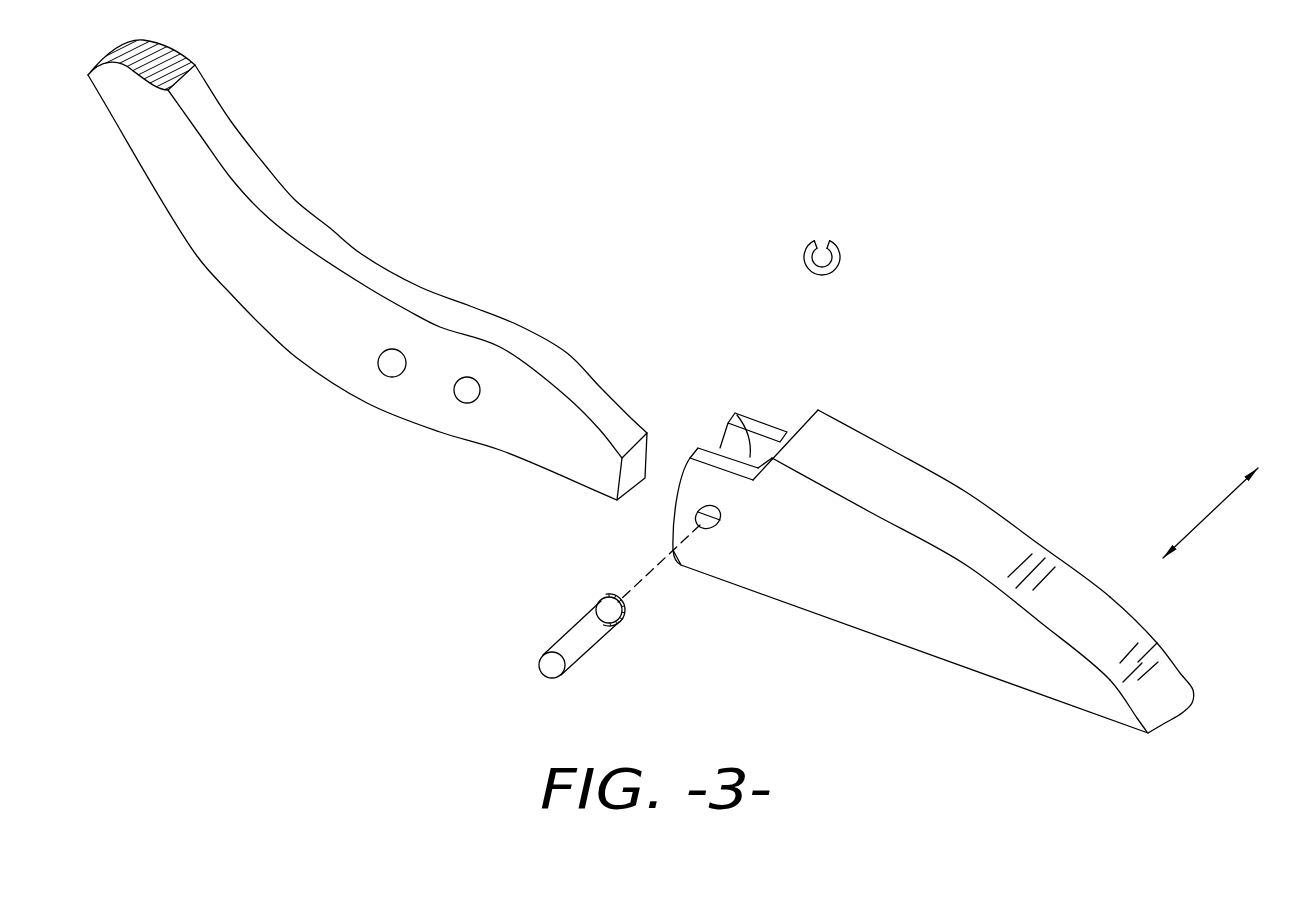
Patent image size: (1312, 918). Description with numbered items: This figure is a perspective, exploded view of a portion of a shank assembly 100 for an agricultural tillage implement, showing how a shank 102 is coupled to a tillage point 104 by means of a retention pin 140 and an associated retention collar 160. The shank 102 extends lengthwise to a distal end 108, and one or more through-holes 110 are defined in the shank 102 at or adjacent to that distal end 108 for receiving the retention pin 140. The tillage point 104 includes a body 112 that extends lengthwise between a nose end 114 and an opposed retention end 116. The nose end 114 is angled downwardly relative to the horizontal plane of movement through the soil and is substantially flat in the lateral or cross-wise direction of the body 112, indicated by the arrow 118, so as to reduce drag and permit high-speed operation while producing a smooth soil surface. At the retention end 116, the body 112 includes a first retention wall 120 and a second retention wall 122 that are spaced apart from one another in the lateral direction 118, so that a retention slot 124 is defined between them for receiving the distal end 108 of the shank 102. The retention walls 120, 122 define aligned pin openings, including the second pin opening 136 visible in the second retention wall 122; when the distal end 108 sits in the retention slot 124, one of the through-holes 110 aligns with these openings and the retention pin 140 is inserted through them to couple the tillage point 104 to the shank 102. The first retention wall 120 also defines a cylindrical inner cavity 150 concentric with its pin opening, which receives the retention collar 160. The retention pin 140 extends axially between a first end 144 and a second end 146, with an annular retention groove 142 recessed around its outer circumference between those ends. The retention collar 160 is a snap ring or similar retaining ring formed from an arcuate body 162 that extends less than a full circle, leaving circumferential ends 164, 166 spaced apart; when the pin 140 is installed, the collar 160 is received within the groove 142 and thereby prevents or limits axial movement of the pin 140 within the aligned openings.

The shank assembly 100 is at (1040, 296).
The shank 102 is at (191, 201).
The tillage point 104 is at (1051, 498).
The distal end 108 is at (438, 303).
The through-holes 110 is at (463, 390).
The body 112 is at (923, 493).
The nose end 114 is at (1207, 718).
The retention end 116 is at (719, 409).
The lateral direction arrow 118 is at (1216, 508).
The first retention wall 120 is at (782, 428).
The second retention wall 122 is at (705, 558).
The retention slot 124 is at (690, 428).
The second pin opening 136 is at (723, 510).
The retention pin 140 is at (531, 621).
The retention groove 142 is at (603, 602).
The first end 144 is at (550, 667).
The second end 146 is at (625, 611).
The inner cavity 150 is at (733, 412).
The retention collar 160 is at (785, 242).
The arcuate body 162 is at (822, 275).
The circumferential end 164 is at (819, 240).
The ring gap 166 is at (829, 242).